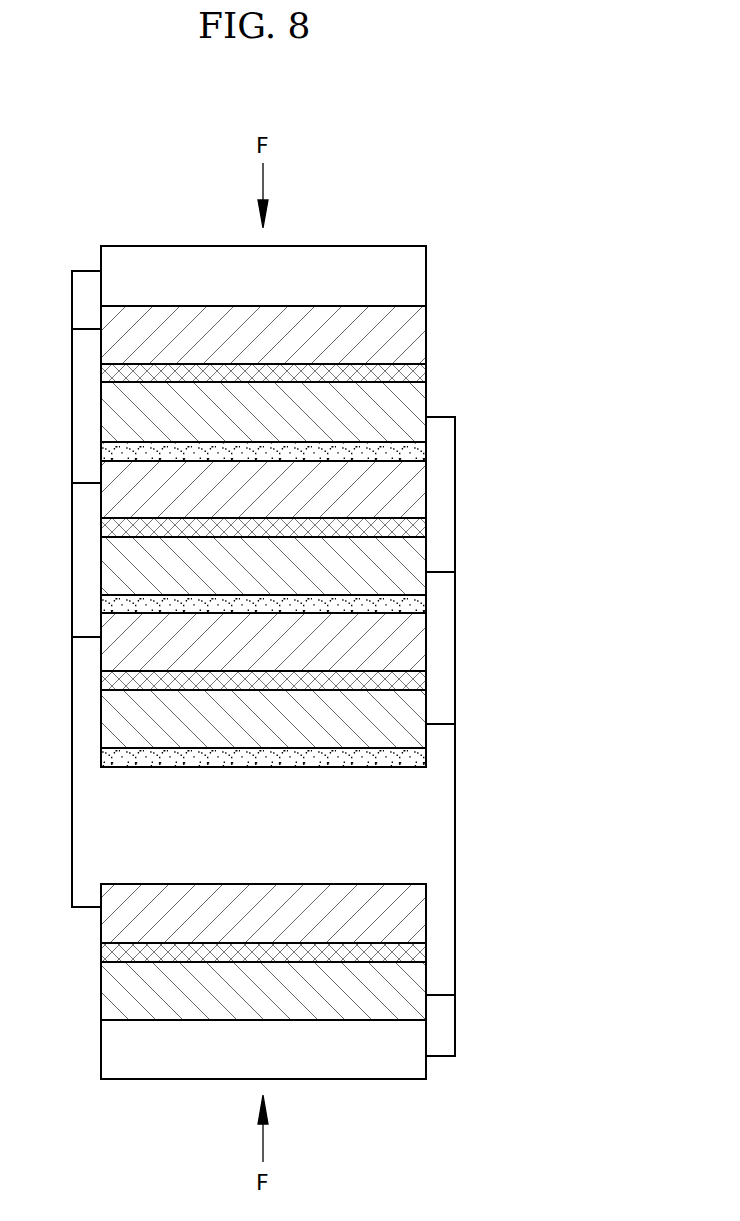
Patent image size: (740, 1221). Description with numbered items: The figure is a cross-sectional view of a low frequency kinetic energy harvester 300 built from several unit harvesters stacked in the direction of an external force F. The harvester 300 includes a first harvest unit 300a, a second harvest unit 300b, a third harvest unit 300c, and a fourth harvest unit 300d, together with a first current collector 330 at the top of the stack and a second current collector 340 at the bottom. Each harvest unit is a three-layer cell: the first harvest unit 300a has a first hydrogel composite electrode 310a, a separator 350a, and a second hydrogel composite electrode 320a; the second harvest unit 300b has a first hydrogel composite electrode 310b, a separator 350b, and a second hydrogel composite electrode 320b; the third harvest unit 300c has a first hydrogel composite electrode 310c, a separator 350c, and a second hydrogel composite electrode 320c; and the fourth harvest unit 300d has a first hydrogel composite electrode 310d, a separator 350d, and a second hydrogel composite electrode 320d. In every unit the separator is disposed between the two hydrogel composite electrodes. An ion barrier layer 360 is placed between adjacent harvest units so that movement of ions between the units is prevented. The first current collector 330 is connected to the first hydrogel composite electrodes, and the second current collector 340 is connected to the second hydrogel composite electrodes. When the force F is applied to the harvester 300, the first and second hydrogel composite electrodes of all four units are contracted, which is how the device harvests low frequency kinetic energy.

The low frequency kinetic energy harvester 300 is at (474, 227).
The first current collector 330 is at (421, 275).
The second current collector 340 is at (421, 1043).
The ion barrier layer 360 is at (426, 451).
The first harvest unit 300a is at (553, 335).
The first hydrogel composite electrode 310a is at (426, 341).
The separator 350a is at (426, 374).
The second hydrogel composite electrode 320a is at (426, 405).
The second harvest unit 300b is at (553, 490).
The first hydrogel composite electrode 310b is at (426, 496).
The separator 350b is at (426, 527).
The second hydrogel composite electrode 320b is at (426, 558).
The third harvest unit 300c is at (553, 643).
The first hydrogel composite electrode 310c is at (426, 649).
The separator 350c is at (426, 681).
The second hydrogel composite electrode 320c is at (426, 713).
The fourth harvest unit 300d is at (553, 914).
The first hydrogel composite electrode 310d is at (426, 920).
The separator 350d is at (426, 952).
The second hydrogel composite electrode 320d is at (426, 984).